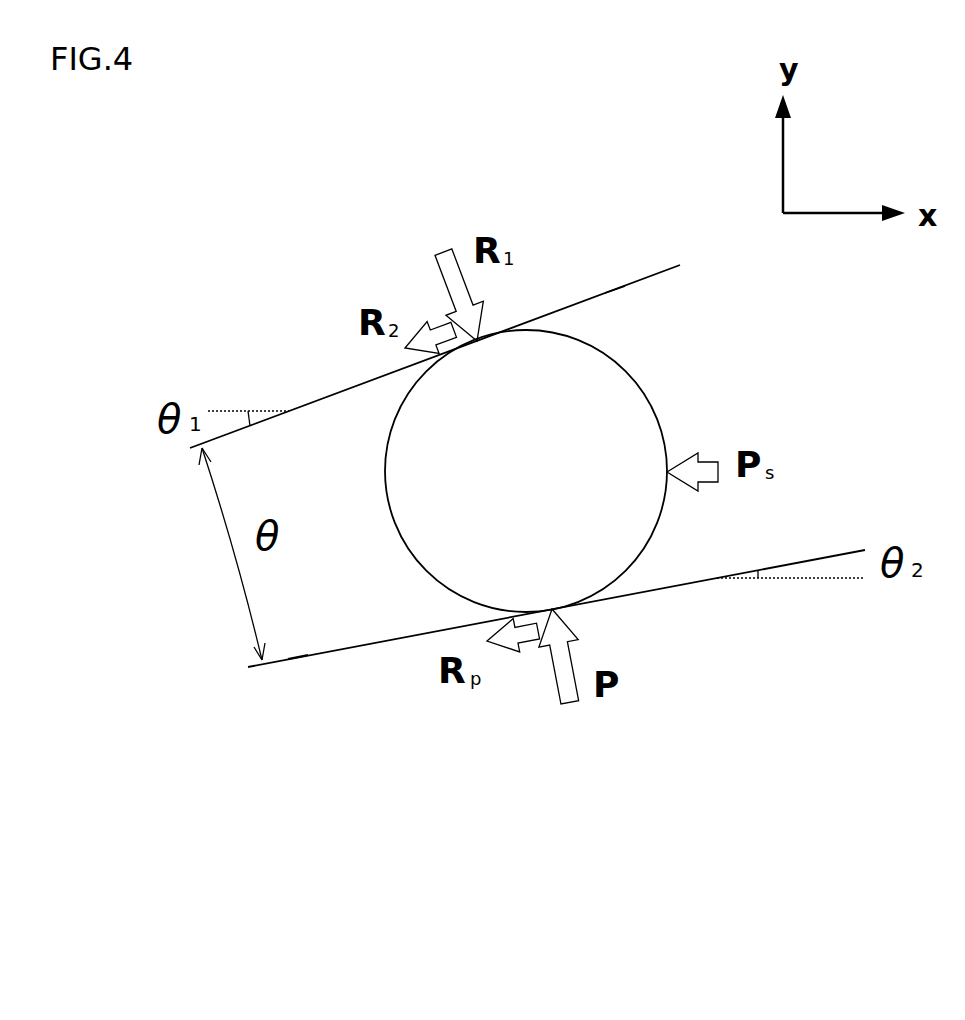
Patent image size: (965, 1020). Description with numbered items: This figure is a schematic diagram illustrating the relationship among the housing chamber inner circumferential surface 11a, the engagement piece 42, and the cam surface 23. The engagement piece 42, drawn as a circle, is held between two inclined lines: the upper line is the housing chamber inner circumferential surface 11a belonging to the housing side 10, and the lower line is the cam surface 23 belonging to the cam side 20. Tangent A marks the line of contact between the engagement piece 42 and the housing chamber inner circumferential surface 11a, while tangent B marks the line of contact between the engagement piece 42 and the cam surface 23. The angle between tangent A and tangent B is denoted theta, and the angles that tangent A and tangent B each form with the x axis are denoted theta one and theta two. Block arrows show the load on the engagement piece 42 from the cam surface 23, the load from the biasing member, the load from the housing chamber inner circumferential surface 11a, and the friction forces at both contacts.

The first member (upper body) 10 is at (385, 175).
The housing chamber inner circumferential surface 11a is at (350, 392).
The second member (lower body) 20 is at (525, 796).
The cam surface 23 is at (397, 637).
The engagement piece 42 is at (582, 407).
The tangent between the engagement piece and the housing chamber inner circumferenti A is at (615, 290).
The tangent between the engagement piece and the cam surface B is at (298, 660).